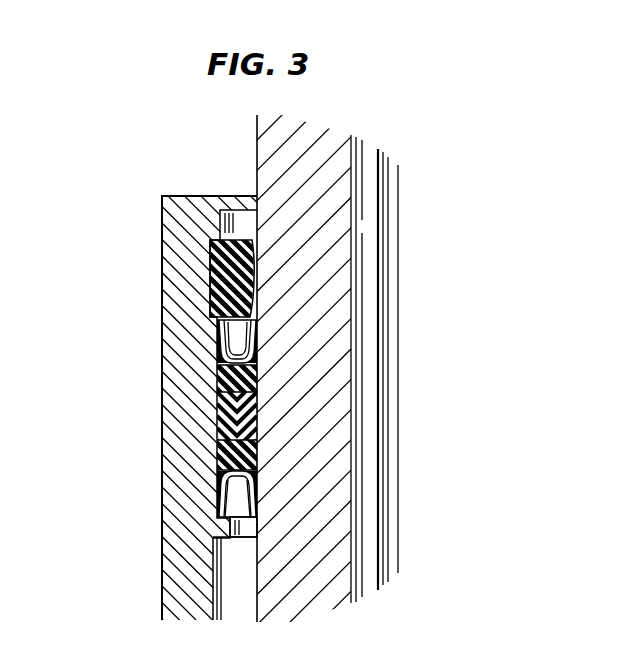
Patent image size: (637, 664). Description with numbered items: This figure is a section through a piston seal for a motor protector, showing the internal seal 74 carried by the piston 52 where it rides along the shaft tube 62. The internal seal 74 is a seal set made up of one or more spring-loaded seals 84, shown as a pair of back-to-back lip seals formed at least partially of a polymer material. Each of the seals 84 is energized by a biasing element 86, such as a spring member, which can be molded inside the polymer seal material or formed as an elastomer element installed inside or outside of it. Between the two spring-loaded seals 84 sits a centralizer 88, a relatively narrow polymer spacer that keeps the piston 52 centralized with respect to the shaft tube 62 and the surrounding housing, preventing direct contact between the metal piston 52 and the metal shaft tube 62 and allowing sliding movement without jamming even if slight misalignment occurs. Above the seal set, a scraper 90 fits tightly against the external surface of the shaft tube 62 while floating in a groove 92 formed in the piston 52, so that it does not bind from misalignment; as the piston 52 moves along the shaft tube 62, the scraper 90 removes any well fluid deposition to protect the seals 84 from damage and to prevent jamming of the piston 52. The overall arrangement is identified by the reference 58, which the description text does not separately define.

The piston 52 is at (162, 550).
The seal assembly 58 is at (237, 190).
The shaft tube 62 is at (257, 570).
The internal seal 74 is at (203, 476).
The spring-loaded seals 84 is at (224, 380).
The biasing elements 86 is at (222, 346).
The centralizer 88 is at (228, 412).
The scraper 90 is at (222, 289).
The groove 92 is at (210, 260).